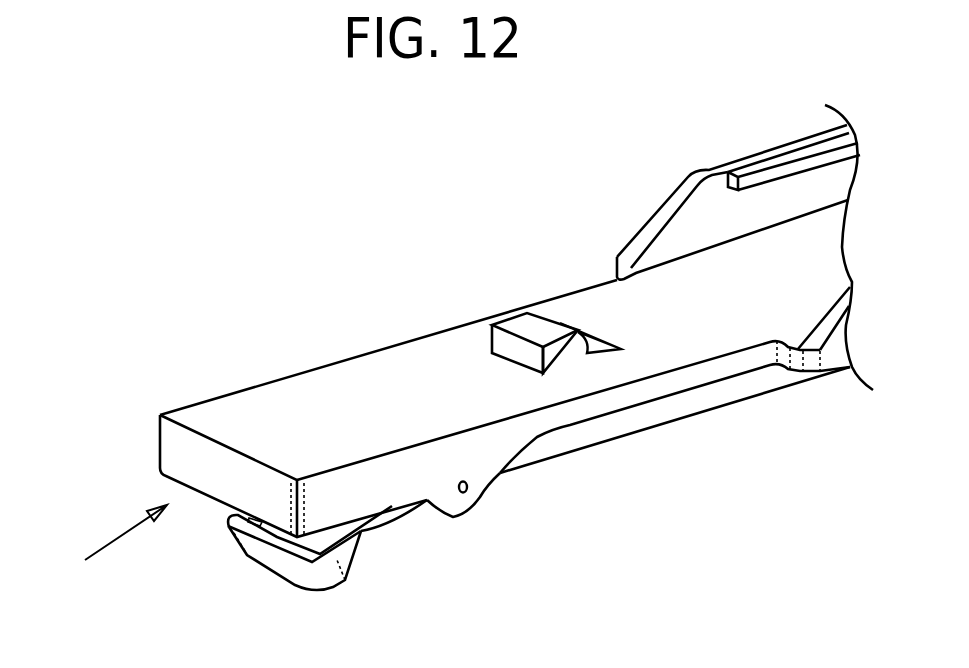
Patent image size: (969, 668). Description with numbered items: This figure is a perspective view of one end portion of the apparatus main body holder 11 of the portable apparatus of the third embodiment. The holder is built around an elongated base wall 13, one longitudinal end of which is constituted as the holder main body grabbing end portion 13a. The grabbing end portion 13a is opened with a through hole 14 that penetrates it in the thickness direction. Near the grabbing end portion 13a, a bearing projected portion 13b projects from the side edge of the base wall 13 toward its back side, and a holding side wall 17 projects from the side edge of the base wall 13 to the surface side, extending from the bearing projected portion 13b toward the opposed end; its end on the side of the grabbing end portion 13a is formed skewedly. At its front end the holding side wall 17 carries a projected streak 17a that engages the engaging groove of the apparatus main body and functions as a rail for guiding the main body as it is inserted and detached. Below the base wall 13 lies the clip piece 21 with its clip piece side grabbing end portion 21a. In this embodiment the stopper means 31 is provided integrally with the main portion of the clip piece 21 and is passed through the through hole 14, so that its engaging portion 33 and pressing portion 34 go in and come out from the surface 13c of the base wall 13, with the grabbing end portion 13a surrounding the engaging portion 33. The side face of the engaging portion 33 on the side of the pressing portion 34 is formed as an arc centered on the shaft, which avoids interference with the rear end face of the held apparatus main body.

The apparatus main body holder 11 is at (102, 542).
The base wall 13 is at (762, 360).
The holder main body grabbing end portion 13a is at (340, 405).
The bearing projected portion 13b is at (460, 510).
The surface of the base wall 13c is at (487, 340).
The through hole 14 is at (520, 350).
The holding side wall 17 is at (722, 215).
The projected streak 17a is at (787, 166).
The clip piece 21 is at (612, 440).
The clip piece side grabbing end portion 21a is at (275, 562).
The stopper means 31 is at (541, 323).
The engaging portion 33 is at (518, 323).
The pressing portion 34 is at (594, 349).